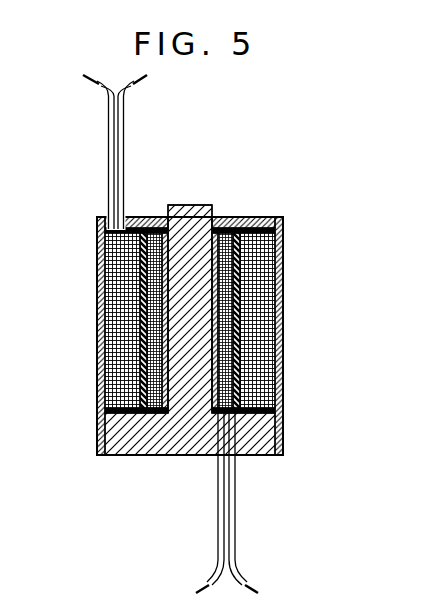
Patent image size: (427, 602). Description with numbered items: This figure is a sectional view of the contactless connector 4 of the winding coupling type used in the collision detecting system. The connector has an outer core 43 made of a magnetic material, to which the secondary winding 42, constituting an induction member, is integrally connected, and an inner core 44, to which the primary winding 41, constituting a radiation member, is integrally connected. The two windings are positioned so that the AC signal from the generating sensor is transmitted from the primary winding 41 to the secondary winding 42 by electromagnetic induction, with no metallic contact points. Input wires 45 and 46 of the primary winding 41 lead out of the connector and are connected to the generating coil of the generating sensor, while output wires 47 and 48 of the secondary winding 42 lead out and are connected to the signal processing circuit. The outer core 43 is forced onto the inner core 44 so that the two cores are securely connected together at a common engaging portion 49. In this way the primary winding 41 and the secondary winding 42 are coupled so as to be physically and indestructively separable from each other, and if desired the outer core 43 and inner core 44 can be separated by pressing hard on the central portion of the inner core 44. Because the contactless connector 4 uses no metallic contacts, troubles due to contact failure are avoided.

The contactless connector 4 is at (88, 300).
The primary winding 41 is at (219, 229).
The secondary winding 42 is at (258, 245).
The outer core 43 is at (283, 225).
The inner core 44 is at (140, 445).
The input wire 45 is at (240, 574).
The input wire 46 is at (212, 577).
The output wire 47 is at (121, 130).
The output wire 48 is at (108, 122).
The common engaging portion 49 is at (283, 428).